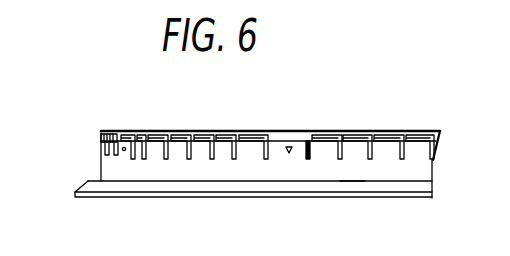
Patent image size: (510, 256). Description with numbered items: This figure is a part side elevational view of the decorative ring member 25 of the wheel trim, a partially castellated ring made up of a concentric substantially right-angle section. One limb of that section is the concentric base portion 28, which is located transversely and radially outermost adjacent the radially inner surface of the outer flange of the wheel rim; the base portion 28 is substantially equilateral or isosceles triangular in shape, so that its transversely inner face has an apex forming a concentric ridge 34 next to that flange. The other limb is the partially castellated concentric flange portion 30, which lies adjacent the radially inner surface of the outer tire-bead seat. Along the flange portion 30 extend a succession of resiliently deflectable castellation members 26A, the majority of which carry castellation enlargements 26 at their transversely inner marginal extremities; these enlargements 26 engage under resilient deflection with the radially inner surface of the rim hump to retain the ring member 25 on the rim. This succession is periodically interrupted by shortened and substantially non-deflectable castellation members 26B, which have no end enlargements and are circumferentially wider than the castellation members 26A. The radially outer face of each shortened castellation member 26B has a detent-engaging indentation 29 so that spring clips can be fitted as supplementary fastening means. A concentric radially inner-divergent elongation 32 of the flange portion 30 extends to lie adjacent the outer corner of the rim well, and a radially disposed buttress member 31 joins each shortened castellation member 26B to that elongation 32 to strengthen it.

The decorative ring member 25 is at (402, 127).
The castellation enlargements 26 is at (99, 139).
The castellation members 26A is at (231, 152).
The shortened castellation members 26B is at (305, 140).
The base portion 28 is at (137, 197).
The detent-engaging indentation 29 is at (123, 152).
The flange portion 30 is at (88, 165).
The buttress member 31 is at (258, 178).
The inner-divergent elongation 32 is at (122, 133).
The concentric ridge 34 is at (353, 172).